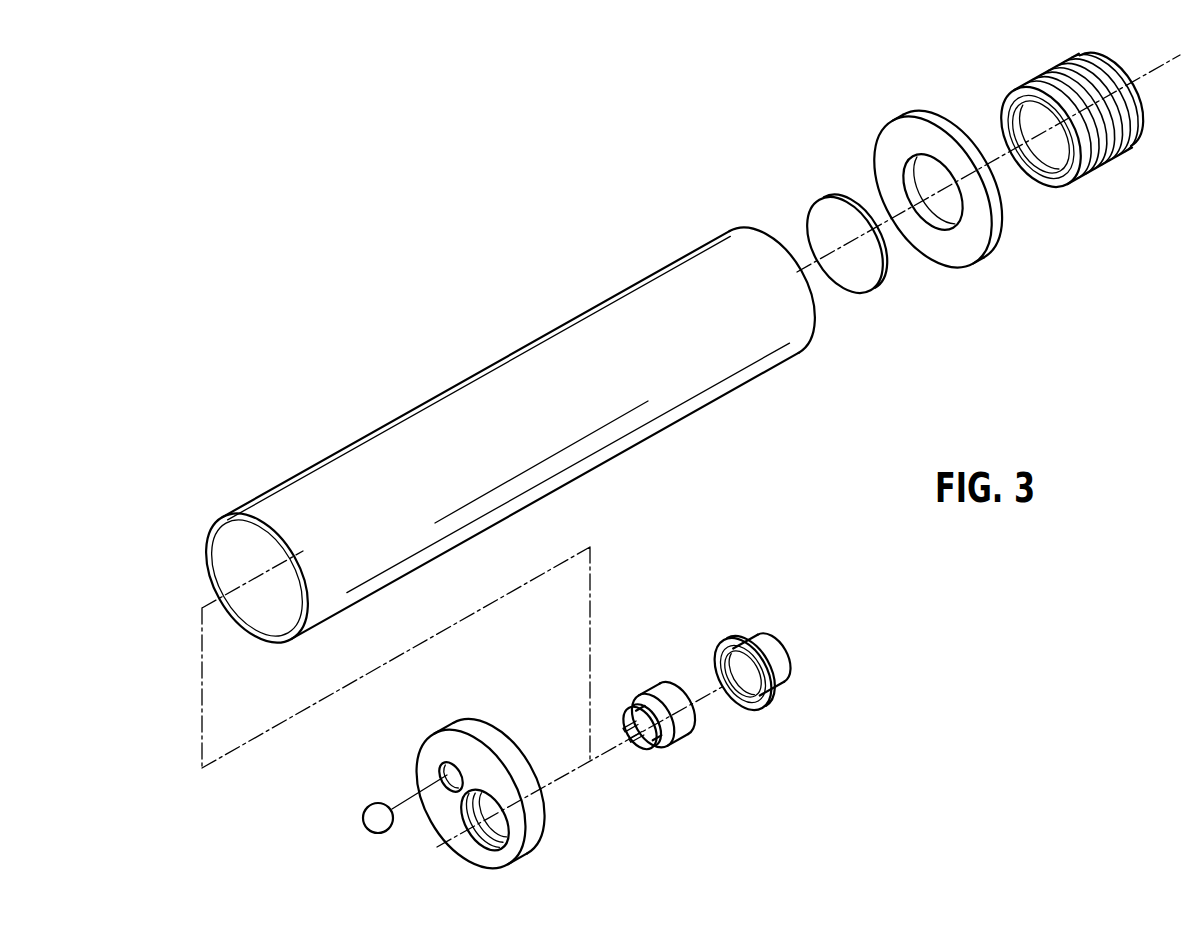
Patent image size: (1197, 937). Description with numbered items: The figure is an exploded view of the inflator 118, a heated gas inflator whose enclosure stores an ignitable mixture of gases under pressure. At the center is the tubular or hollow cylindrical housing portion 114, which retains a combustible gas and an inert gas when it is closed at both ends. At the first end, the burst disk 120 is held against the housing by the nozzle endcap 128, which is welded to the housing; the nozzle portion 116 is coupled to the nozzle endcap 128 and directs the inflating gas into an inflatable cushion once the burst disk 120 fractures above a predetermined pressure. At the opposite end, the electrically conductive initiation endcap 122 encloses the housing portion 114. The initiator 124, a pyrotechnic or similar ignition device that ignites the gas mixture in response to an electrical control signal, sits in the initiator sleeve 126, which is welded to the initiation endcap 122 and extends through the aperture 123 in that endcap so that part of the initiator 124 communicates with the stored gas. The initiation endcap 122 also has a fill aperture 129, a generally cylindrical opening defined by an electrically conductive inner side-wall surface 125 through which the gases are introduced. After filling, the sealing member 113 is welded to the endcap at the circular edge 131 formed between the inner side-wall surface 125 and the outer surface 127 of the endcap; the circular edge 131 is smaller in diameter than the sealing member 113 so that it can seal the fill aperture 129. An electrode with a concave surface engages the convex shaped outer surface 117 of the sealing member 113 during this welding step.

The sealing member 113 is at (330, 829).
The housing portion 114 is at (510, 435).
The nozzle portion 116 is at (1060, 113).
The convex shaped outer surface 117 is at (330, 845).
The inflator 118 is at (691, 451).
The burst disk 120 is at (799, 236).
The initiation endcap 122 is at (484, 787).
The aperture 123 is at (445, 837).
The initiator 124 is at (679, 741).
The inner side-wall surface 125 is at (375, 788).
The initiator sleeve 126 is at (772, 692).
The outer surface 127 is at (532, 788).
The nozzle endcap 128 is at (924, 180).
The fill aperture 129 is at (481, 735).
The circular edge 131 is at (430, 738).